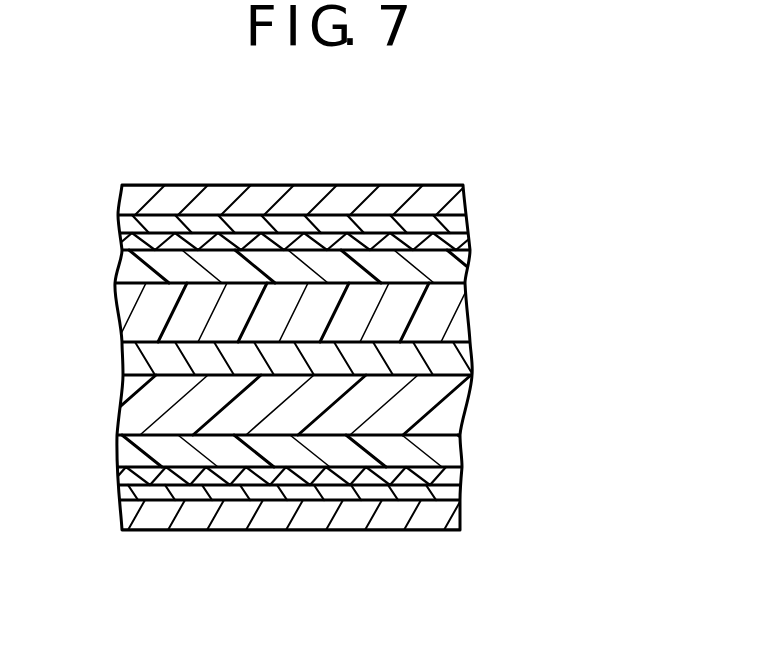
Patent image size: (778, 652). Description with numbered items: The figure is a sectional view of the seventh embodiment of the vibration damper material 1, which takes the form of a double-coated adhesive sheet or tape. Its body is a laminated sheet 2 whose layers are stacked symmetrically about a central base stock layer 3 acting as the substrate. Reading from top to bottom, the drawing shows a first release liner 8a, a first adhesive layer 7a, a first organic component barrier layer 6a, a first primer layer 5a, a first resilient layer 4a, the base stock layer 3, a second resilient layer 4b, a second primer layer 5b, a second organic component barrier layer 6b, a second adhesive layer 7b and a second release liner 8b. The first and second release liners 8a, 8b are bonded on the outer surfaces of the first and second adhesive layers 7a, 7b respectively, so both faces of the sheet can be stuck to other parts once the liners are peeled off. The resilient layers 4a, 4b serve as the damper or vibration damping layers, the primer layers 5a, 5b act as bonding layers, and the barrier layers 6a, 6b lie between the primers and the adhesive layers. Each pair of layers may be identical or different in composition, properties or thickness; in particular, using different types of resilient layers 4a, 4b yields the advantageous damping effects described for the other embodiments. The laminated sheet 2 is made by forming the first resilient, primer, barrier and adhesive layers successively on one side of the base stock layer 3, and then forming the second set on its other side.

The vibration damper material 1 is at (432, 178).
The laminated sheet 2 is at (80, 215).
The base stock layer 3 is at (455, 360).
The first resilient layer 4a is at (442, 317).
The second resilient layer 4b is at (447, 405).
The first primer layer 5a is at (452, 270).
The second primer layer 5b is at (443, 453).
The first organic component barrier layer 6a is at (470, 247).
The second organic component barrier layer 6b is at (458, 478).
The first adhesive layer 7a is at (463, 225).
The second adhesive layer 7b is at (463, 497).
The first release liner 8a is at (450, 205).
The second release liner 8b is at (463, 523).